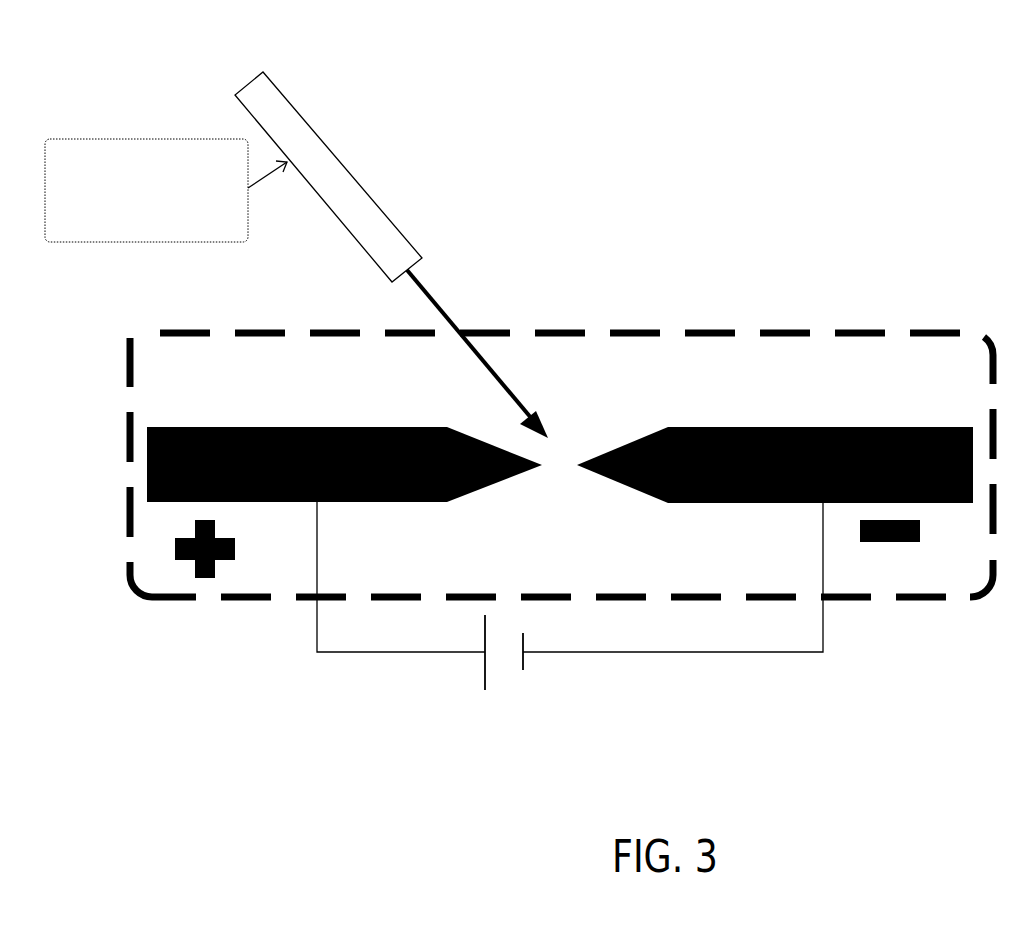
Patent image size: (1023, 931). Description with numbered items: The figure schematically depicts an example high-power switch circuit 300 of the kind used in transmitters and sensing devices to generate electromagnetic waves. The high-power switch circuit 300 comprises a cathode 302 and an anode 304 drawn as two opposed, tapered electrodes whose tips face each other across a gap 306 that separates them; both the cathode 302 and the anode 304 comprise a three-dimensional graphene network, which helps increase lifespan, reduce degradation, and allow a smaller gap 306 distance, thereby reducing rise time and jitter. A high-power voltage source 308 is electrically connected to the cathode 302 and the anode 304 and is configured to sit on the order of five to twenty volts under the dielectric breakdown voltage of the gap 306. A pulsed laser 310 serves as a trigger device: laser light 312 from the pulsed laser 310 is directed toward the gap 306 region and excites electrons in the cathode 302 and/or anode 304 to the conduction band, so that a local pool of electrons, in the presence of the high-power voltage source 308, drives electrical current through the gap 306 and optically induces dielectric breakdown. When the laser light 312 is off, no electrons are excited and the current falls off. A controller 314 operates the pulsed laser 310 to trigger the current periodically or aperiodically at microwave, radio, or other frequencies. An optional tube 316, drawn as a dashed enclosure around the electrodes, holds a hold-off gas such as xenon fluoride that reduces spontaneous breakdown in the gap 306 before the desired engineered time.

The high-power switch circuit 300 is at (826, 96).
The cathode 302 is at (335, 427).
The anode 304 is at (785, 425).
The gap 306 is at (560, 490).
The high-power voltage source 308 is at (485, 672).
The pulsed laser 310 is at (378, 207).
The laser light 312 is at (435, 295).
The controller 314 is at (130, 216).
The tube 316 is at (798, 330).